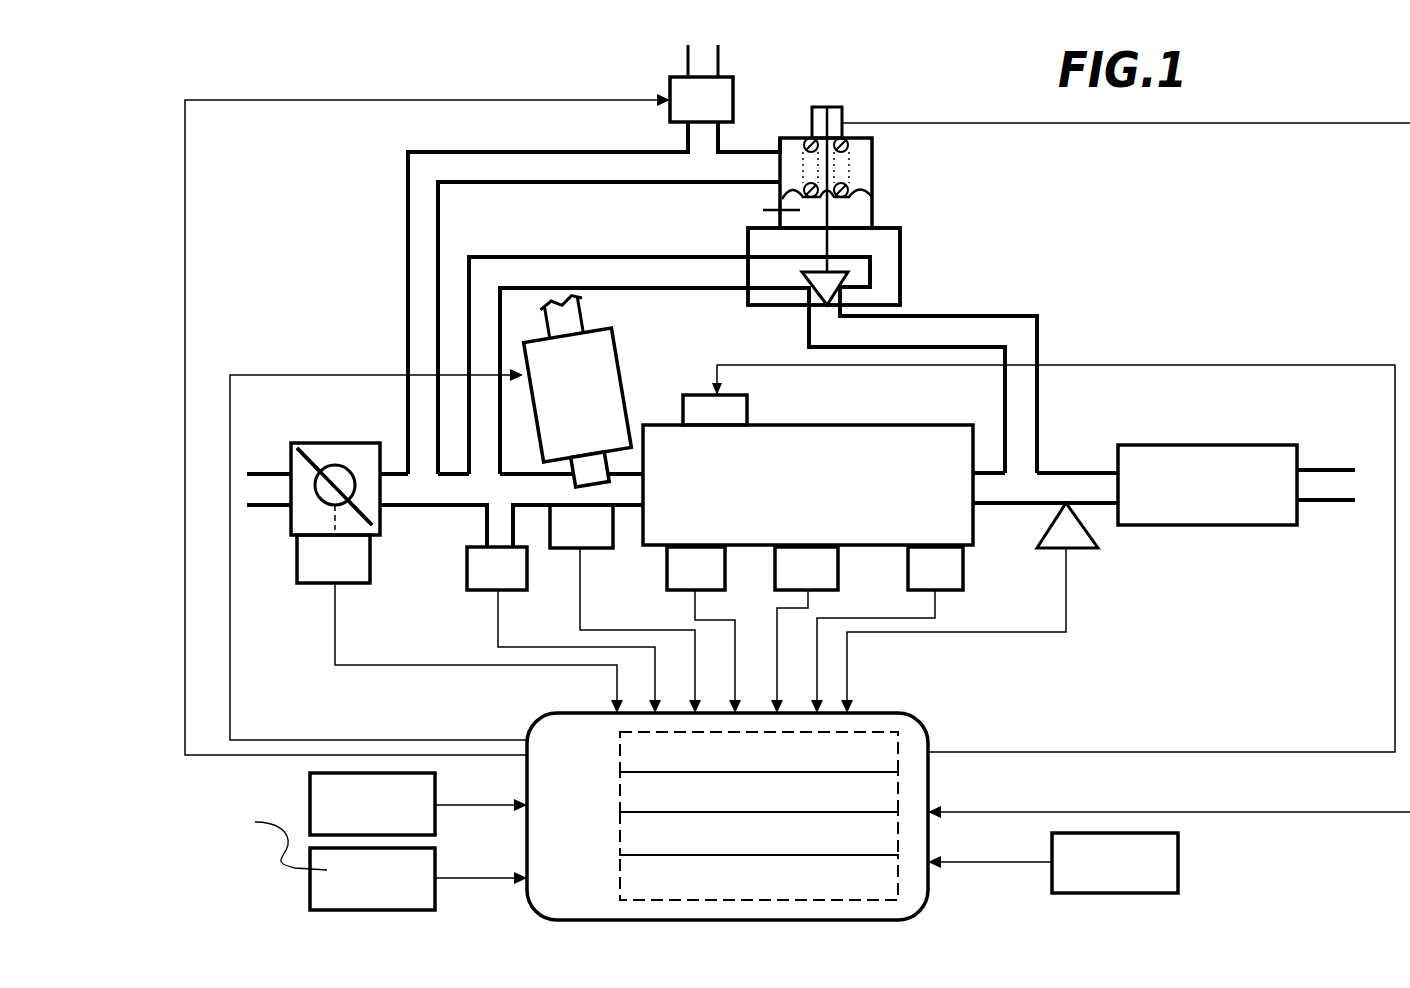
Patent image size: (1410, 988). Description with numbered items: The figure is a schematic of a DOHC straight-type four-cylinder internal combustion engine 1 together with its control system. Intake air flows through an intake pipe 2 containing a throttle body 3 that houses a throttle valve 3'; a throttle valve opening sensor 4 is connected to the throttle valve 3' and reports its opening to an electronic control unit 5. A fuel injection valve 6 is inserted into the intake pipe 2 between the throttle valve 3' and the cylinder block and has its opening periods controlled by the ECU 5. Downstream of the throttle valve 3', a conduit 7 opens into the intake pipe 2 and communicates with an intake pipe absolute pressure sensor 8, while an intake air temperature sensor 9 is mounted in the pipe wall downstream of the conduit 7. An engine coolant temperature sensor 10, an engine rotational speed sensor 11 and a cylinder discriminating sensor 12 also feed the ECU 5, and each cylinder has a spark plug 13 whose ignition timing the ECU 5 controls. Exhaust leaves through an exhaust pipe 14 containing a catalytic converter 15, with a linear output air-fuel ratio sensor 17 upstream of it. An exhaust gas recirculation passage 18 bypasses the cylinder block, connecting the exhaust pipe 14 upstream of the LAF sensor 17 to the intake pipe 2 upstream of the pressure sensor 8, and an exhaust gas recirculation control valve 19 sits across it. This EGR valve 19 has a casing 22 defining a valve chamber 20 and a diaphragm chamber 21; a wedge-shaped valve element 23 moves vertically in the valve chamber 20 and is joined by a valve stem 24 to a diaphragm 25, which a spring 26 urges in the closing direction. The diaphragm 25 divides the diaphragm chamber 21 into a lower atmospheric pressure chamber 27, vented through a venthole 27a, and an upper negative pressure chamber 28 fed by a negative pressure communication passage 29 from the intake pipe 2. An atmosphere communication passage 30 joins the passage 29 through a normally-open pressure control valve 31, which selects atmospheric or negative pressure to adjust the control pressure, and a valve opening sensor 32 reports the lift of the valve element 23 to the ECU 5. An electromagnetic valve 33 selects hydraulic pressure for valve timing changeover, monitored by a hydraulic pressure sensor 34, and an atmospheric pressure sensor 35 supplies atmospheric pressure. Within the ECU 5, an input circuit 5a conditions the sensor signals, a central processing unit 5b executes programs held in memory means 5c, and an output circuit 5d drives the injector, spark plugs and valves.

The internal combustion engine 1 is at (940, 424).
The intake pipe 2 is at (413, 507).
The throttle body 3 is at (317, 465).
The throttle valve 3' is at (335, 460).
The throttle valve opening sensor 4 is at (360, 585).
The electronic control unit 5 is at (524, 724).
The input circuit 5a is at (898, 740).
The central processing unit 5b is at (898, 800).
The memory means 5c is at (898, 850).
The output circuit 5d is at (898, 888).
The fuel injection valve 6 is at (630, 375).
The conduit 7 is at (485, 522).
The intake pipe absolute pressure sensor 8 is at (503, 592).
The intake air temperature sensor 9 is at (565, 549).
The engine coolant temperature sensor 10 is at (667, 568).
The engine rotational speed sensor 11 is at (840, 568).
The cylinder discriminating sensor 12 is at (965, 556).
The spark plug 13 is at (750, 411).
The exhaust pipe 14 is at (1059, 470).
The catalytic converter 15 is at (1192, 445).
The linear output air-fuel ratio sensor 17 is at (1085, 530).
The exhaust gas recirculation passage 18 is at (499, 256).
The exhaust gas recirculation control valve 19 is at (915, 242).
The valve chamber 20 is at (893, 280).
The diaphragm chamber 21 is at (865, 160).
The casing 22 is at (790, 310).
The valve element 23 is at (842, 290).
The valve stem 24 is at (815, 250).
The diaphragm 25 is at (860, 191).
The spring 26 is at (850, 148).
The atmospheric pressure chamber 27 is at (776, 216).
The venthole 27a is at (785, 213).
The negative pressure chamber 28 is at (795, 140).
The negative pressure communication passage 29 is at (728, 149).
The atmosphere communication passage 30 is at (686, 138).
The pressure control valve 31 is at (670, 84).
The valve opening sensor 32 is at (842, 110).
The electromagnetic valve 33 is at (310, 900).
The hydraulic pressure sensor 34 is at (310, 815).
The atmospheric pressure sensor 35 is at (1178, 870).